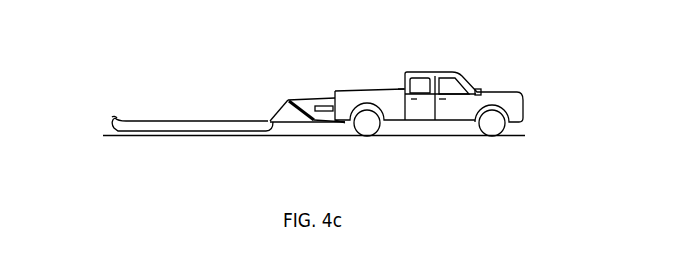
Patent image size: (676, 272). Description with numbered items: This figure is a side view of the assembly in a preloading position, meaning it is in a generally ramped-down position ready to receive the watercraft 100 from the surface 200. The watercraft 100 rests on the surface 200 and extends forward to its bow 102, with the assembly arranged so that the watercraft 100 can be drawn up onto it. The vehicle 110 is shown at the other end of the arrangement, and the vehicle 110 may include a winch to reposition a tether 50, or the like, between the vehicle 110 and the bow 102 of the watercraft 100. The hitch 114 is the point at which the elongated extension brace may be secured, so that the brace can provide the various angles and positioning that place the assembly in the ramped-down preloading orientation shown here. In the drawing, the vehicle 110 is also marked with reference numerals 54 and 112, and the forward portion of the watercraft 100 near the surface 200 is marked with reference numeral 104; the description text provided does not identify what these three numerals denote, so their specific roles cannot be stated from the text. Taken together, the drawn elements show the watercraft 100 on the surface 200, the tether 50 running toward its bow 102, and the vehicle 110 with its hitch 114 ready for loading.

The tether 50 is at (315, 98).
The hitch connection point 54 is at (402, 90).
The watercraft 100 is at (200, 121).
The bow 102 is at (264, 121).
The trailer front end 104 is at (113, 117).
The vehicle 110 is at (467, 80).
The tow vehicle bed 112 is at (362, 90).
The hitch 114 is at (342, 124).
The surface 200 is at (106, 136).